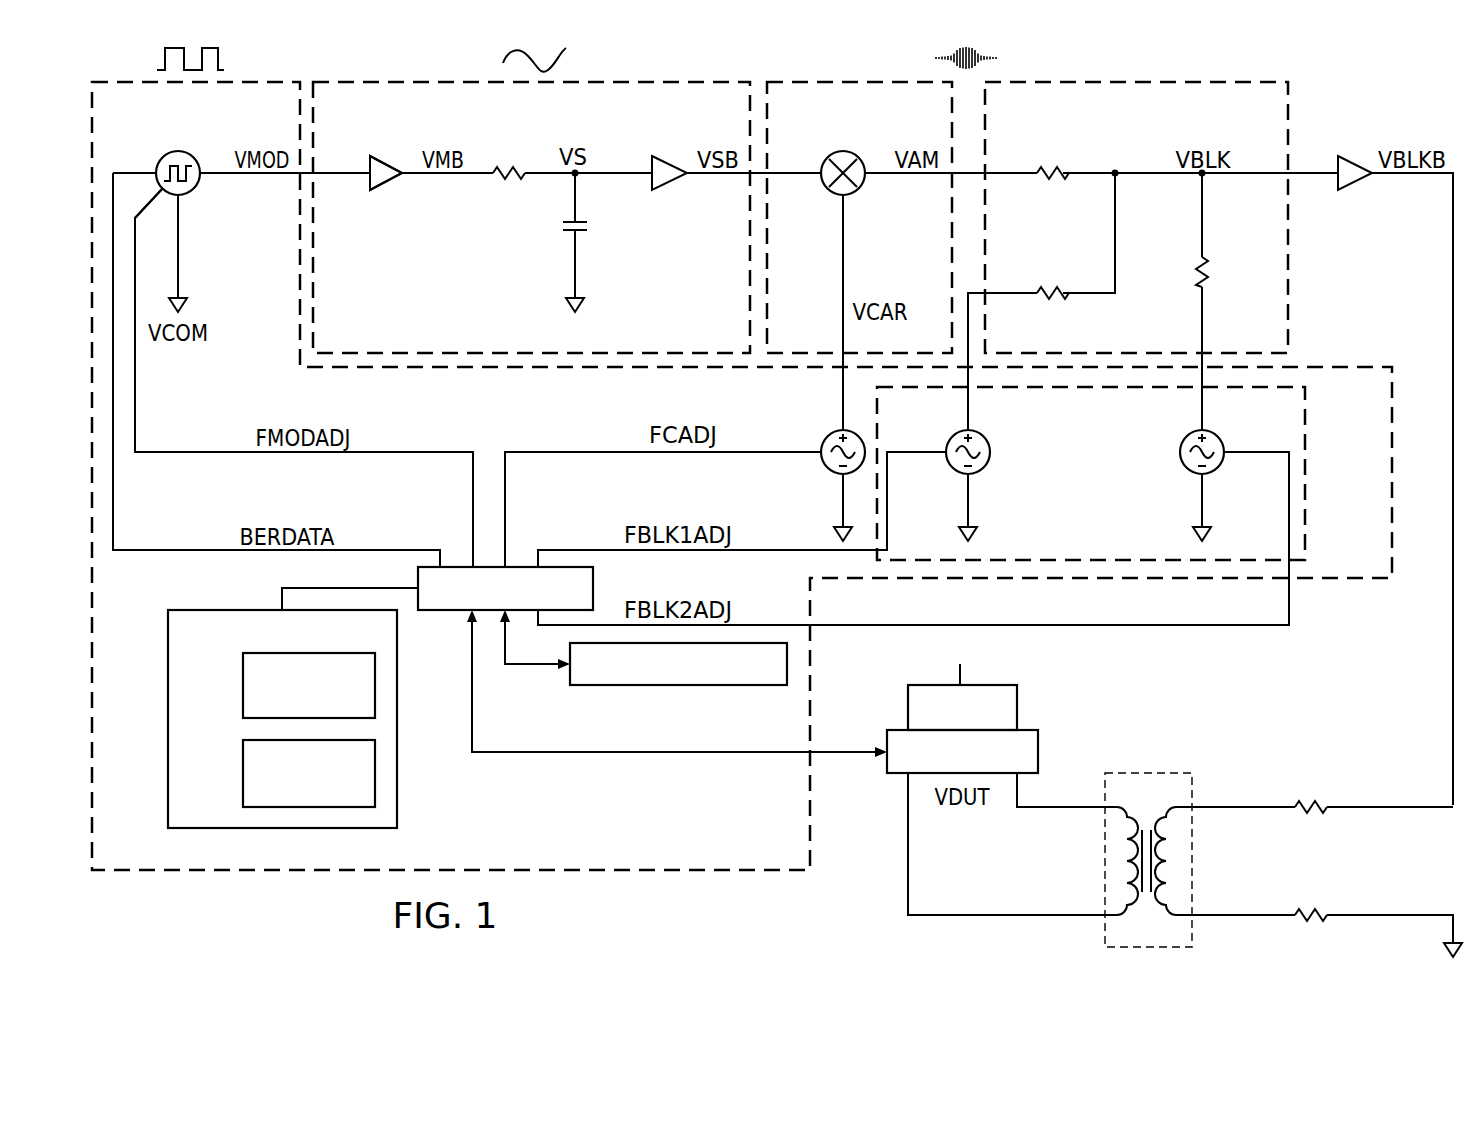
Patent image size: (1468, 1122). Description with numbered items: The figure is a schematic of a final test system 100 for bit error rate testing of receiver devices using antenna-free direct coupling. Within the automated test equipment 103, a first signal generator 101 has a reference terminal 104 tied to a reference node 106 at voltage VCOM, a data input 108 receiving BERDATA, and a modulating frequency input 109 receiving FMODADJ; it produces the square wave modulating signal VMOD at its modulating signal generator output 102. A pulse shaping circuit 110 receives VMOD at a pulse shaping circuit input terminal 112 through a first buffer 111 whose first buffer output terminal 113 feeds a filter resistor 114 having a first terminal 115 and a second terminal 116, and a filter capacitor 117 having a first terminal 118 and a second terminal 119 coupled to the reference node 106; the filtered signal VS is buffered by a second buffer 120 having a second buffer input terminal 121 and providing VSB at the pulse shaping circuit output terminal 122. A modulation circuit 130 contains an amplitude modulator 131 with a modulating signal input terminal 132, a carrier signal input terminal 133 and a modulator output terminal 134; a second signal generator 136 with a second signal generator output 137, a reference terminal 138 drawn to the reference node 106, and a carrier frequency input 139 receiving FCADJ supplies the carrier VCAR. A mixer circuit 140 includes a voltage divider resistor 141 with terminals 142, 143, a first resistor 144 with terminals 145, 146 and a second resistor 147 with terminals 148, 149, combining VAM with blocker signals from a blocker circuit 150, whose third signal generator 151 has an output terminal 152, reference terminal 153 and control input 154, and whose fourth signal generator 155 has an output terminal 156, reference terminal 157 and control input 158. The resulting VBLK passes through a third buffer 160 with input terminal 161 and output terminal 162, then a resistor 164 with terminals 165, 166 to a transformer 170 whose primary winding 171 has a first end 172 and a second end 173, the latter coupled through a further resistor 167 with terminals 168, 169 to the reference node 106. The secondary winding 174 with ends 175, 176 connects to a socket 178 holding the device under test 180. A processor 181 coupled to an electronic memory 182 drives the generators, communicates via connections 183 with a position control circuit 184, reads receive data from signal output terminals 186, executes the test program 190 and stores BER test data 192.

The final test system 100 is at (858, 893).
The first signal generator 101 is at (198, 187).
The modulating signal generator output 102 is at (204, 166).
The automated test equipment 103 is at (333, 870).
The reference terminal 104 is at (180, 228).
The reference node 106 is at (181, 292).
The data input 108 is at (150, 172).
The modulating frequency input 109 is at (137, 358).
The pulse shaping circuit 110 is at (398, 311).
The first buffer 111 is at (388, 162).
The pulse shaping circuit input terminal 112 is at (371, 180).
The first buffer output terminal 113 is at (404, 180).
The filter resistor 114 is at (510, 181).
The first terminal of filter resistor 115 is at (492, 168).
The second terminal of filter resistor 116 is at (527, 168).
The filter capacitor 117 is at (590, 227).
The first terminal of filter capacitor 118 is at (578, 207).
The second terminal of filter capacitor 119 is at (578, 257).
The second buffer 120 is at (673, 162).
The second buffer input terminal 121 is at (650, 168).
The pulse shaping circuit output terminal 122 is at (690, 179).
The modulation circuit 130 is at (778, 311).
The amplitude modulator 131 is at (858, 190).
The modulating signal input terminal 132 is at (820, 166).
The carrier signal input terminal 133 is at (831, 197).
The modulator output terminal 134 is at (868, 166).
The second signal generator 136 is at (822, 444).
The second signal generator output 137 is at (841, 420).
The ground terminal of carrier source 138 is at (841, 486).
The carrier frequency input 139 is at (683, 456).
The mixer circuit 140 is at (1183, 116).
The voltage divider resistor 141 is at (1048, 168).
The first terminal of voltage divider resistor 142 is at (1036, 179).
The second terminal of voltage divider resistor 143 is at (1065, 179).
The first resistor 144 is at (1048, 288).
The first terminal of first resistor 145 is at (1036, 299).
The second terminal of first resistor 146 is at (1065, 299).
The second resistor 147 is at (1198, 272).
The first terminal of second resistor 148 is at (1205, 292).
The second terminal of second resistor 149 is at (1205, 252).
The blocker circuit 150 is at (1305, 472).
The third signal generator 151 is at (992, 458).
The first sideband signal generator output terminal 152 is at (971, 425).
The reference terminal 153 is at (972, 486).
The control input 154 is at (936, 451).
The fourth signal generator 155 is at (1180, 460).
The second sideband signal generator output terminal 156 is at (1200, 425).
The reference terminal 157 is at (1205, 486).
The control input 158 is at (1232, 450).
The third buffer 160 is at (1360, 163).
The third buffer input terminal 161 is at (1330, 179).
The third buffer output terminal 162 is at (1378, 179).
The resistor 164 is at (1311, 802).
The first terminal of resistor 165 is at (1328, 803).
The second terminal of resistor 166 is at (1294, 803).
The further resistor 167 is at (1311, 910).
The first terminal of further resistor 168 is at (1328, 911).
The second terminal of further resistor 169 is at (1294, 911).
The transformer 170 is at (1147, 828).
The primary winding 171 is at (1170, 856).
The first end of primary winding 172 is at (1184, 800).
The second end of primary winding 173 is at (1184, 922).
The secondary winding 174 is at (1122, 868).
The first end of secondary winding 175 is at (1114, 800).
The second end of secondary winding 176 is at (1114, 922).
The socket 178 is at (1038, 752).
The device under test 180 is at (1017, 707).
The processor 181 is at (463, 612).
The electronic memory 182 is at (247, 719).
The communications connections 183 is at (540, 668).
The position control circuit 184 is at (680, 688).
The signal output terminals 186 is at (540, 756).
The test program 190 is at (243, 687).
The BER test data 192 is at (243, 774).